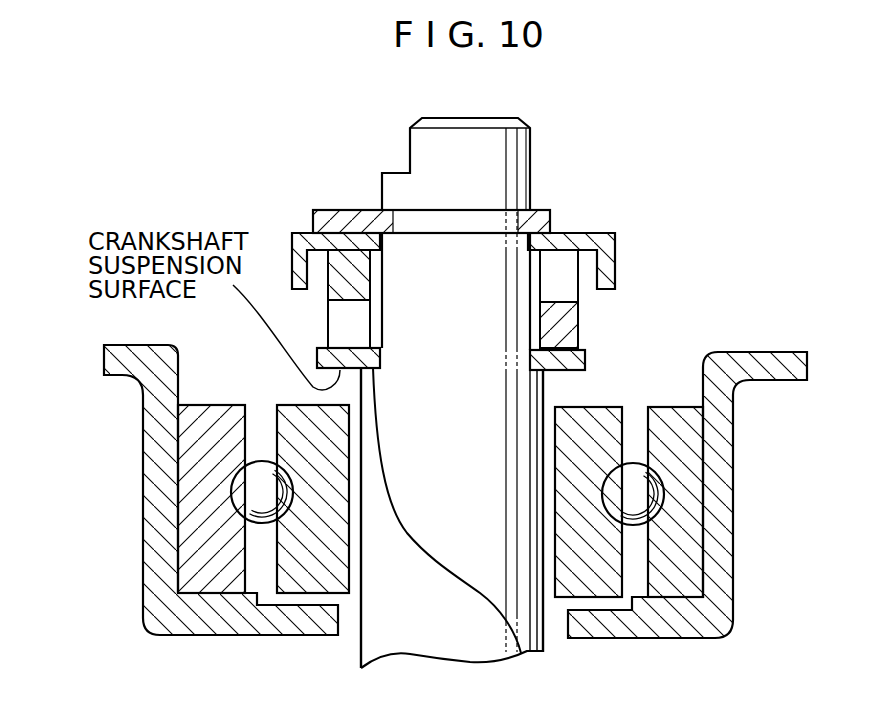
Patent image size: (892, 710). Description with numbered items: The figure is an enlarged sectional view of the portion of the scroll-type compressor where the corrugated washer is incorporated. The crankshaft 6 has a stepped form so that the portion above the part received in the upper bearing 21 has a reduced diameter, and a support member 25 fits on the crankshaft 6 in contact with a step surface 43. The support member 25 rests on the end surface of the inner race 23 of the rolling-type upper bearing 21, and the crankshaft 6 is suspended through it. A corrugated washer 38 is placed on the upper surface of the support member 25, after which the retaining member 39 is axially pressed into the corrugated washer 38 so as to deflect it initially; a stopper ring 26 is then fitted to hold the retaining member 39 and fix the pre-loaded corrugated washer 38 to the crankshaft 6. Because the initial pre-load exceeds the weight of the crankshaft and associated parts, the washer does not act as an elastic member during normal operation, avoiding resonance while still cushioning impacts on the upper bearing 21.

The crankshaft 6 is at (498, 162).
The upper bearing 21 is at (263, 458).
The inner race 23 is at (583, 420).
The support member 25 is at (583, 360).
The stopper ring 26 is at (357, 216).
The corrugated washer 38 is at (308, 246).
The retaining member 39 is at (578, 233).
The step surface 43 is at (514, 636).